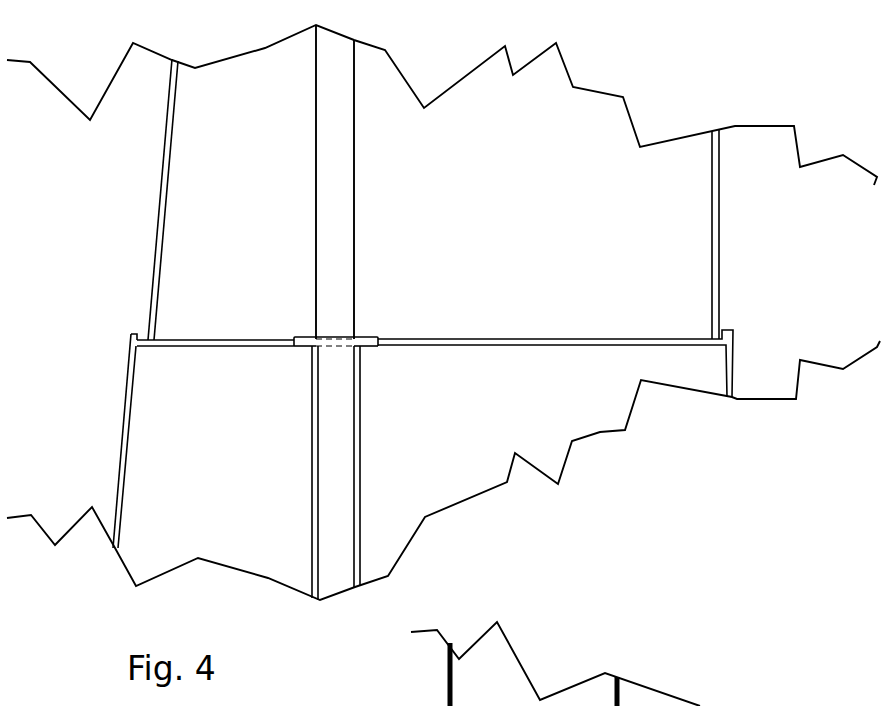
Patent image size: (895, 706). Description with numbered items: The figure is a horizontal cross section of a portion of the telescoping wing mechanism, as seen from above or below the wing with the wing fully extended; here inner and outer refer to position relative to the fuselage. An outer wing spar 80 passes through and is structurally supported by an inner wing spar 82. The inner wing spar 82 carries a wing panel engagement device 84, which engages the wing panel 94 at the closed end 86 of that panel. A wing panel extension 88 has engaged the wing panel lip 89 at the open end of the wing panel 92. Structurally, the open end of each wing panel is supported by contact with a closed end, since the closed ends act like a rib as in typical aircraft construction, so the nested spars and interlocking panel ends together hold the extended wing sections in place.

The outer wing spar 80 is at (355, 252).
The inner wing spar 82 is at (360, 487).
The wing panel engagement device 84 is at (370, 345).
The closed end 86 is at (483, 345).
The wing panel extension 88 is at (138, 348).
The wing panel lip 89 is at (135, 330).
The wing panel 92 is at (127, 462).
The wing panel 94 is at (170, 205).